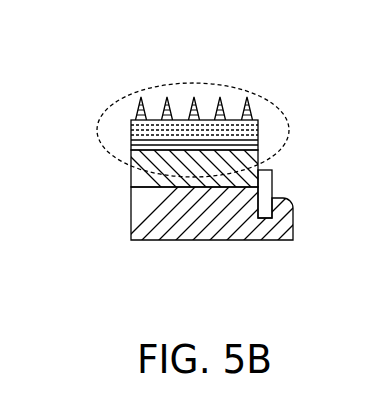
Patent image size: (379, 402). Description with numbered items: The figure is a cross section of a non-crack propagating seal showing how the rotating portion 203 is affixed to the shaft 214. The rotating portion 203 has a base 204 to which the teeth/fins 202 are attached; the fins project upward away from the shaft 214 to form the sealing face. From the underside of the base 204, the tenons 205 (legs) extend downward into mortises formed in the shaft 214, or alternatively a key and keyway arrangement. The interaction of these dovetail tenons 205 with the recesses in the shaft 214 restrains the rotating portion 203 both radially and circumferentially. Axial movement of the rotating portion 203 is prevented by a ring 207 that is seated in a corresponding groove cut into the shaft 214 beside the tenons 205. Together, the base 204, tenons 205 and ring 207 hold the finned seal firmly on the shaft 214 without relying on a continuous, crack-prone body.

The teeth/fins 202 is at (231, 98).
The rotating portion 203 is at (122, 98).
The base 204 is at (131, 137).
The tenons 205 is at (131, 170).
The ring 207 is at (274, 186).
The shaft 214 is at (197, 238).